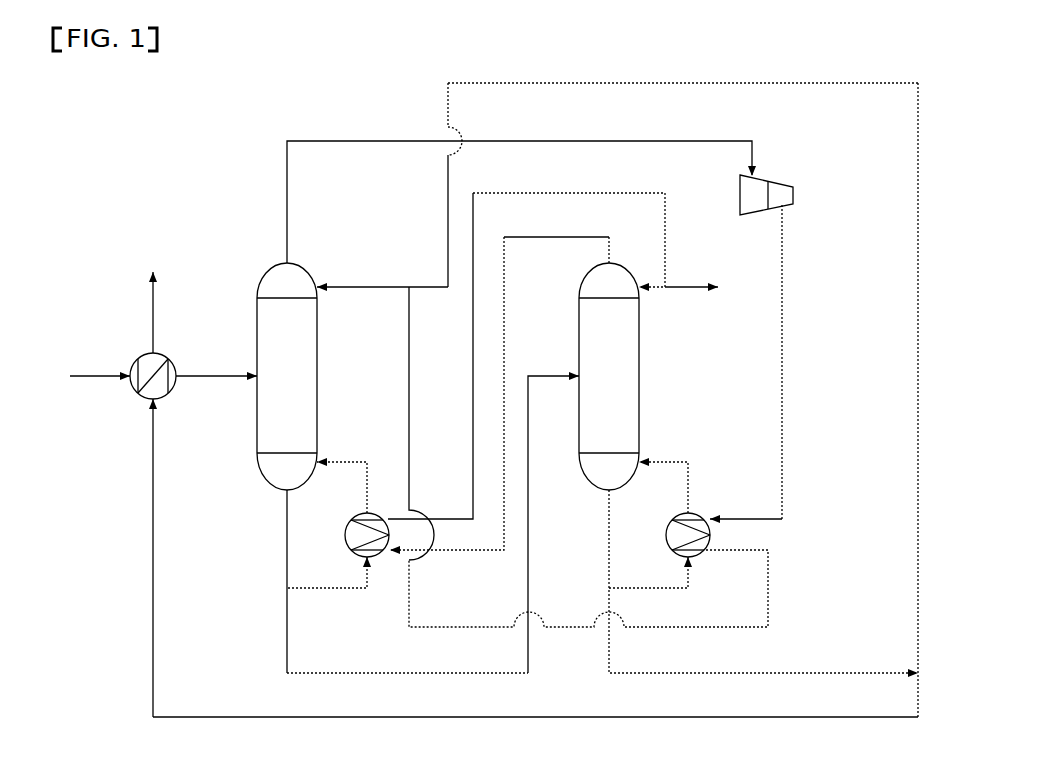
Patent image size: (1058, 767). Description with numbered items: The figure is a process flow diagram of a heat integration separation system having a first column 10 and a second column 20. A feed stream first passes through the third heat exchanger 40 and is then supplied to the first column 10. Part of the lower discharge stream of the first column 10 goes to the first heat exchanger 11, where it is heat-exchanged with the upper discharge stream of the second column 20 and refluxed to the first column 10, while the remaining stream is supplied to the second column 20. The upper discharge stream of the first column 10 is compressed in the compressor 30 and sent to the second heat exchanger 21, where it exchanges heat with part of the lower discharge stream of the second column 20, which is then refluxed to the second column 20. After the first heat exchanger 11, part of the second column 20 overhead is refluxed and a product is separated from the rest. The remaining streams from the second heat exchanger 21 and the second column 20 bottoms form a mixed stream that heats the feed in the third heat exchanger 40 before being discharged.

The first column 10 is at (318, 382).
The first heat exchanger 11 is at (349, 540).
The second column 20 is at (639, 377).
The second heat exchanger 21 is at (708, 537).
The compressor 30 is at (782, 183).
The third heat exchanger 40 is at (141, 355).